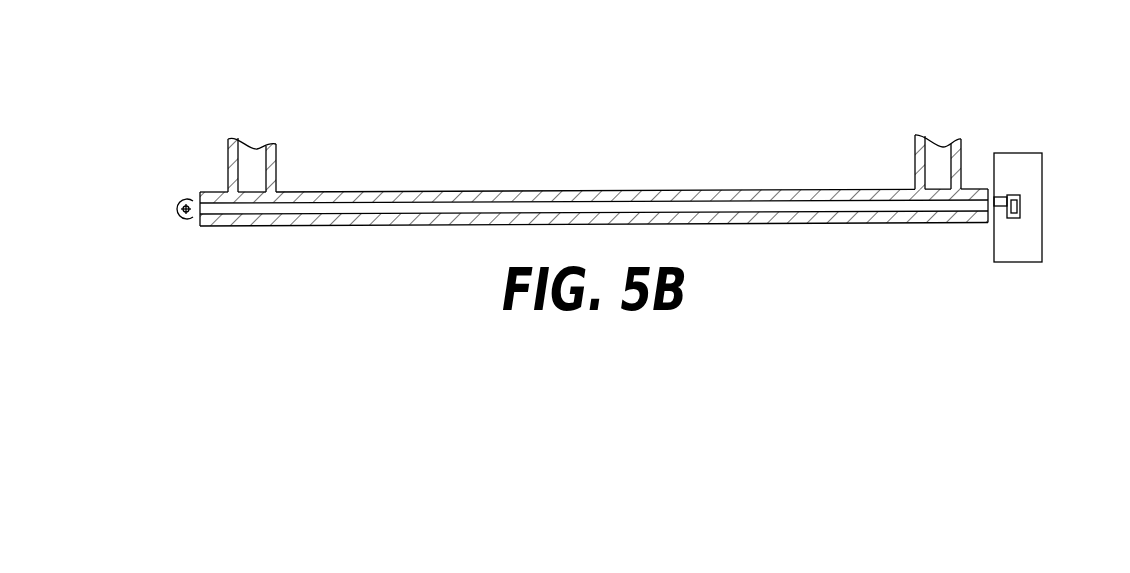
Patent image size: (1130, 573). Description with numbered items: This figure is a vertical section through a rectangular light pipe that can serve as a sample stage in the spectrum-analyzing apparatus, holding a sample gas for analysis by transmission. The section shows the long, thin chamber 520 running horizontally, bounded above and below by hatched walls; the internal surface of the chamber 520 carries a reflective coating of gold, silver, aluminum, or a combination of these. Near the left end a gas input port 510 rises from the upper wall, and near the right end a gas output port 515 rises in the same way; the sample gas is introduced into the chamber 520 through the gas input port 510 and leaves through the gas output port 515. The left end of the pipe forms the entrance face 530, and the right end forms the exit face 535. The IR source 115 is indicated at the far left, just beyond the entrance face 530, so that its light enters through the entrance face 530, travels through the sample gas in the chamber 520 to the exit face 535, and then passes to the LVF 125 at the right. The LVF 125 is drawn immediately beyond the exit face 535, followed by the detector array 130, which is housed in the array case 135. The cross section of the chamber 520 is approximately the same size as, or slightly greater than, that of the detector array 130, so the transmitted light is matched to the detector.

The IR source 115 is at (166, 200).
The LVF 125 is at (1004, 181).
The detector array 130 is at (1035, 200).
The array case 135 is at (1038, 277).
The gas input port 510 is at (253, 125).
The gas output port 515 is at (936, 120).
The chamber 520 is at (626, 208).
The entrance face 530 is at (195, 201).
The exit face 535 is at (985, 205).